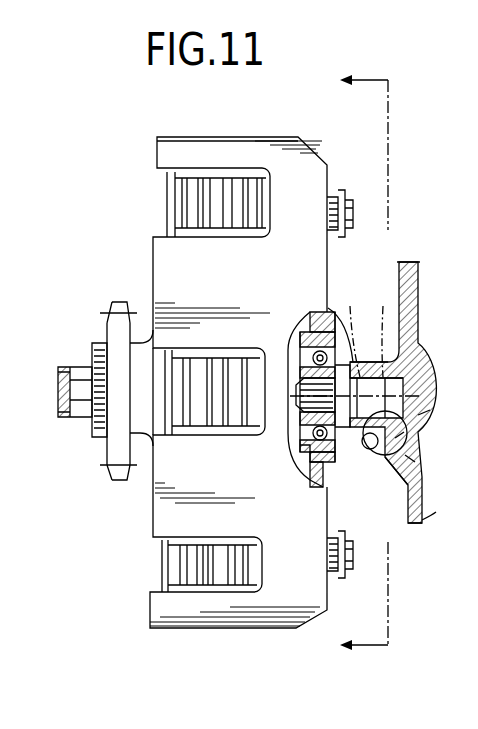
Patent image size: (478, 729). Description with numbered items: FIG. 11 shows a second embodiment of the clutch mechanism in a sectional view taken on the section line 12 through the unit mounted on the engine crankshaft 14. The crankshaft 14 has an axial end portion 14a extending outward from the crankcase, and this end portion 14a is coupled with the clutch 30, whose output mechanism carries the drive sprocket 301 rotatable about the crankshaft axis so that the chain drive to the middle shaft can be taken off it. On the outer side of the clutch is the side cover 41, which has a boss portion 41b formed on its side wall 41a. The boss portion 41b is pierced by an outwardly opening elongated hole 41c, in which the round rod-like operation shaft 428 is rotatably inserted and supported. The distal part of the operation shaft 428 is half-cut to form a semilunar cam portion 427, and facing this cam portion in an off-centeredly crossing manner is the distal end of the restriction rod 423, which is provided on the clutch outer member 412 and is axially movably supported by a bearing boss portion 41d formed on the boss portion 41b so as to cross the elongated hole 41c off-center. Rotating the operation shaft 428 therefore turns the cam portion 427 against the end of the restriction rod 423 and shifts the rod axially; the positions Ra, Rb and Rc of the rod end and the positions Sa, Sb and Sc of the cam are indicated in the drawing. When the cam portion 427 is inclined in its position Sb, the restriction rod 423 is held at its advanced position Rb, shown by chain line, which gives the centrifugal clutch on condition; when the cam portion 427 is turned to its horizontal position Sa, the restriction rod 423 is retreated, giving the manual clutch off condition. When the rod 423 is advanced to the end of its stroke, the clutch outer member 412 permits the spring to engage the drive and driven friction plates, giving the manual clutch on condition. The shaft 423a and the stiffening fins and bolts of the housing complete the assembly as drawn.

The piston 12 is at (349, 364).
The crankshaft 14 is at (75, 384).
The axial end portion of the crankshaft 14a is at (76, 419).
The clutch 30 is at (174, 279).
The drive sprocket 301 is at (121, 472).
The side cover 41 is at (424, 277).
The side wall 41a is at (431, 520).
The boss portion 41b is at (387, 470).
The elongated hole 41c is at (300, 459).
The bearing boss portion 41d is at (403, 376).
The clutch outer member 412 is at (283, 143).
The restriction rod 423 is at (421, 381).
The bearing hub shaft 423a is at (322, 318).
The semilunar cam portion 427 is at (320, 478).
The operation shaft 428 is at (421, 455).
The reference line Ra is at (350, 330).
The advanced position of the restriction rod Rb is at (384, 330).
The reference surface Rc is at (431, 411).
The horizontal position of the cam portion Sa is at (410, 443).
The inclined position of the cam portion Sb is at (417, 462).
The surface Sc is at (370, 433).